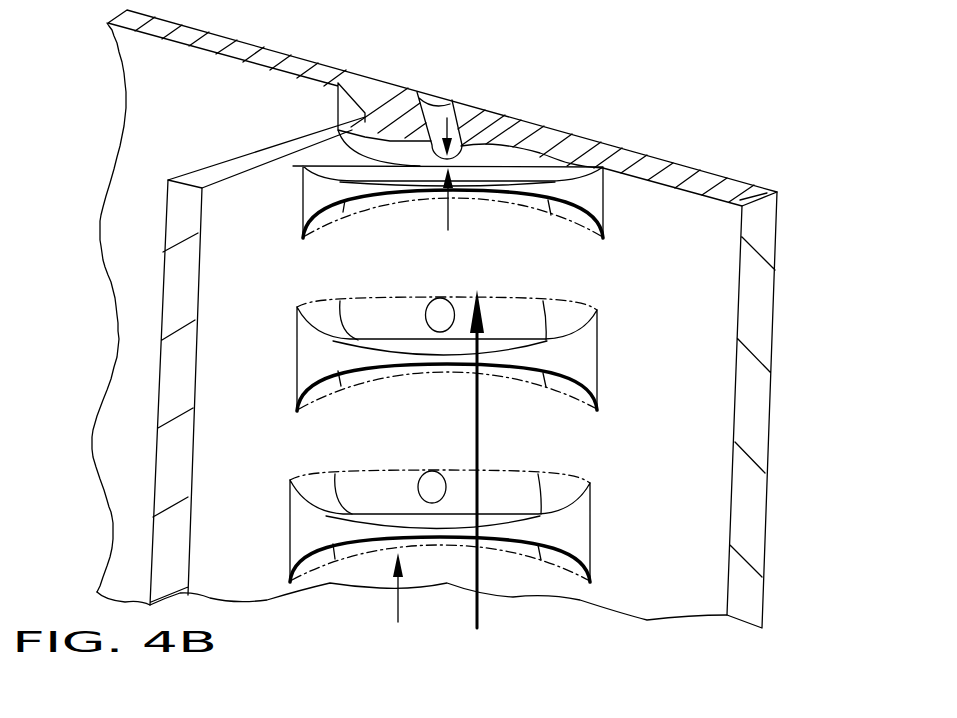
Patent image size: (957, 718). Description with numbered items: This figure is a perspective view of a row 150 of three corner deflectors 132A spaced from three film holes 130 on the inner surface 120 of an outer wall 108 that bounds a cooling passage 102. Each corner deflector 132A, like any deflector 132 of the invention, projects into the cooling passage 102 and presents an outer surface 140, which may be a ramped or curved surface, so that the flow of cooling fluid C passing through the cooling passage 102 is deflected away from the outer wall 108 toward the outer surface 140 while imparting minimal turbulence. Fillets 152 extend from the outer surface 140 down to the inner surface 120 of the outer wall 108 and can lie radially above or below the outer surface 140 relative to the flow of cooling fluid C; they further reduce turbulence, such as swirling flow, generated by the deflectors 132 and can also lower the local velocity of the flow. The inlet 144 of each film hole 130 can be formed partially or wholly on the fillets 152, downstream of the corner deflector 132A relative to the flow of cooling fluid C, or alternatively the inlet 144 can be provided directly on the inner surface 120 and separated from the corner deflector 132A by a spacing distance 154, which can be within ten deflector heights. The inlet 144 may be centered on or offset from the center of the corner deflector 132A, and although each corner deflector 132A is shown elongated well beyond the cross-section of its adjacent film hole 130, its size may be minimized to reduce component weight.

The cooling passage 102 is at (691, 428).
The outer wall 108 is at (737, 166).
The inner surface 120 is at (717, 327).
The film hole 130 is at (426, 85).
The deflector 132 is at (614, 567).
The corner deflector 132A is at (591, 199).
The outer surface 140 is at (317, 190).
The inlet 144 is at (460, 140).
The row 150 is at (399, 604).
The fillet 152 is at (502, 158).
The spacing distance 154 is at (447, 210).
The flow of cooling fluid C is at (477, 605).